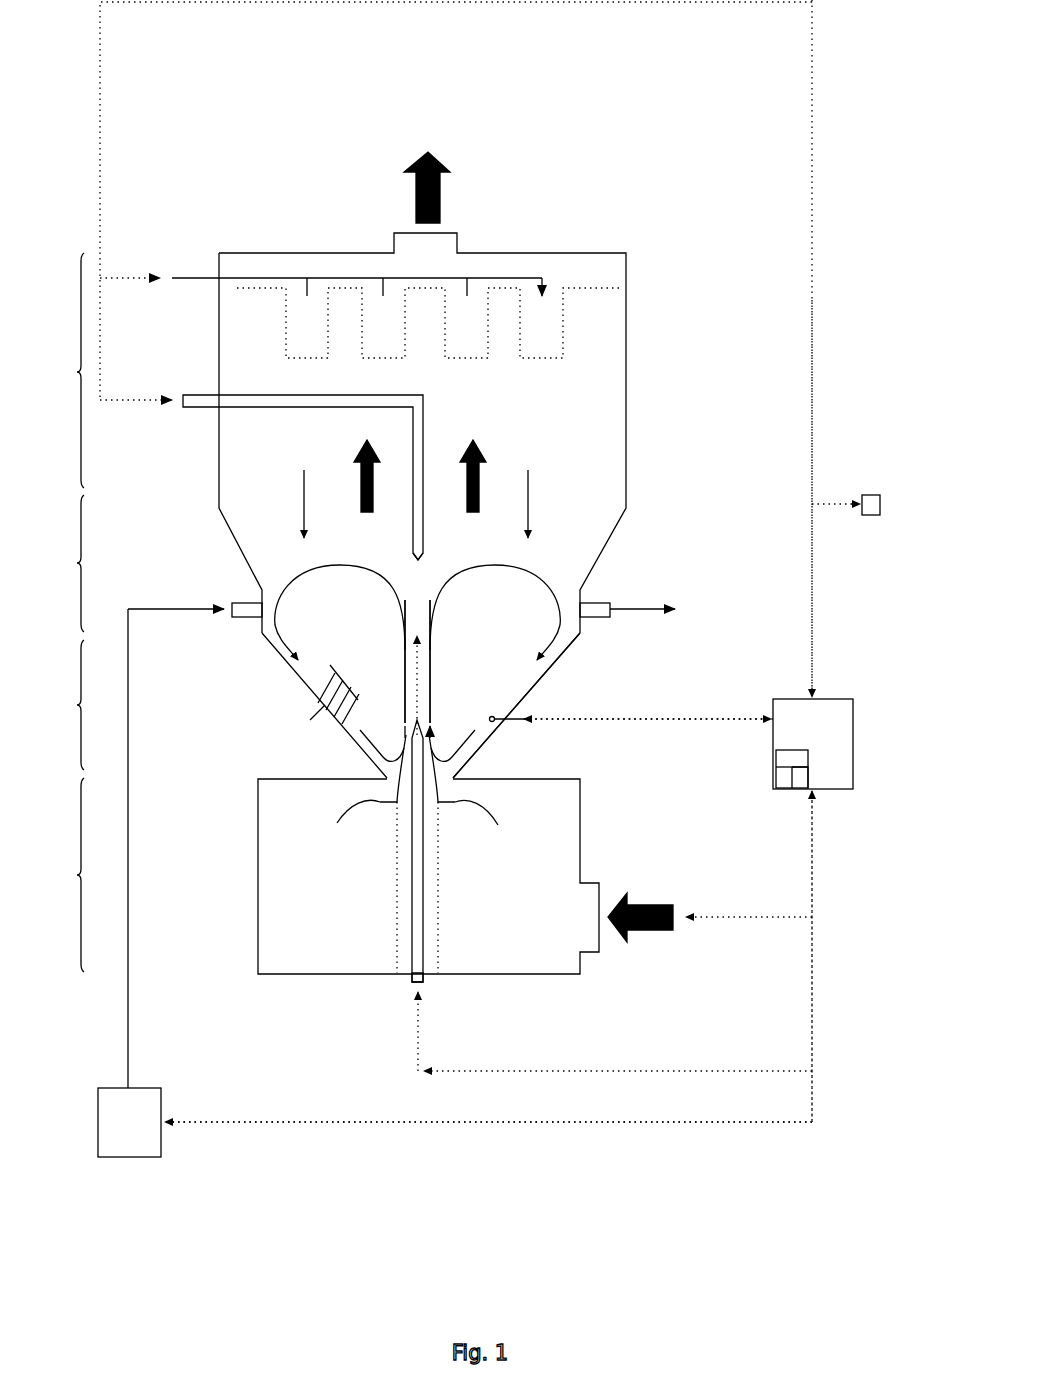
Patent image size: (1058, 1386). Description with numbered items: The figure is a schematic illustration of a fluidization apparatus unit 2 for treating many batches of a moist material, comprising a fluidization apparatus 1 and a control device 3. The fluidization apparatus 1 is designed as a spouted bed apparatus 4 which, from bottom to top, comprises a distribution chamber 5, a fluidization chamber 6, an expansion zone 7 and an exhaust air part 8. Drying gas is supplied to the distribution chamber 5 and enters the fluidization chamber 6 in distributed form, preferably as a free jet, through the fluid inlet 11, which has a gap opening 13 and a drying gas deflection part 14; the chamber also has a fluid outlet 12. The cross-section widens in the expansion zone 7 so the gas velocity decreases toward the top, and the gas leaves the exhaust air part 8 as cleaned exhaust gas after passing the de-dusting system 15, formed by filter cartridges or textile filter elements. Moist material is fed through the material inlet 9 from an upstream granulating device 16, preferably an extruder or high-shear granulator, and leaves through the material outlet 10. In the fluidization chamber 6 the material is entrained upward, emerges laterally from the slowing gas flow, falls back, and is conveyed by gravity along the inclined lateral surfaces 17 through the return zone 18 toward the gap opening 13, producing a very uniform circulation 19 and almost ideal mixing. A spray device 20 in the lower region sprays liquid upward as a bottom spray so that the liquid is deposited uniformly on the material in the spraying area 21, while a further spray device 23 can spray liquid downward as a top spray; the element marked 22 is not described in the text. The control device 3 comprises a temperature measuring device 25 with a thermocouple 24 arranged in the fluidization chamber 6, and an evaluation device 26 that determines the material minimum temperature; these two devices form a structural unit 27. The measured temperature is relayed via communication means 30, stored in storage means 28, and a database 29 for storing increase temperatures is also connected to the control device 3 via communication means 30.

The fluidization apparatus 1 is at (593, 203).
The fluidization apparatus unit 2 is at (628, 1194).
The control device 3 is at (842, 693).
The spouted bed apparatus 4 is at (672, 533).
The distribution chamber 5 is at (424, 876).
The fluidization chamber 6 is at (60, 705).
The expansion zone 7 is at (60, 563).
The exhaust air part 8 is at (60, 370).
The material inlet 9 is at (250, 602).
The material outlet 10 is at (610, 603).
The fluid inlet 11 is at (470, 773).
The fluid outlet 12 is at (472, 540).
The gap opening 13 is at (383, 790).
The drying gas deflection part 14 is at (382, 800).
The de-dusting system 15 is at (240, 290).
The granulating device 16 is at (128, 1161).
The inclined lateral surfaces 17 is at (553, 670).
The return zone 18 is at (436, 721).
The circulation 19 is at (417, 645).
The spray device 20 is at (427, 978).
The spraying area 21 is at (403, 699).
The deflector flap 22 is at (310, 720).
The spray device 23 is at (207, 408).
The thermocouple 24 is at (510, 720).
The temperature measuring device 25 is at (798, 758).
The evaluation device 26 is at (780, 783).
The structural unit 27 is at (773, 776).
The storage means 28 is at (803, 777).
The database 29 is at (867, 493).
The communication means 30 is at (815, 293).